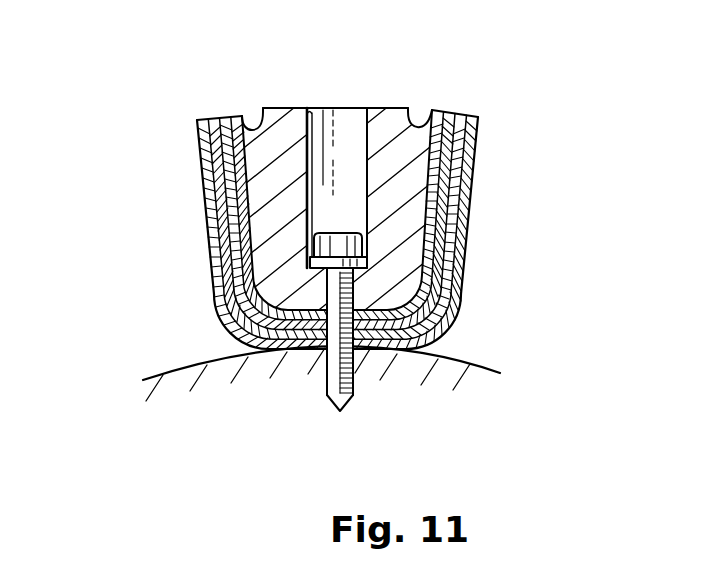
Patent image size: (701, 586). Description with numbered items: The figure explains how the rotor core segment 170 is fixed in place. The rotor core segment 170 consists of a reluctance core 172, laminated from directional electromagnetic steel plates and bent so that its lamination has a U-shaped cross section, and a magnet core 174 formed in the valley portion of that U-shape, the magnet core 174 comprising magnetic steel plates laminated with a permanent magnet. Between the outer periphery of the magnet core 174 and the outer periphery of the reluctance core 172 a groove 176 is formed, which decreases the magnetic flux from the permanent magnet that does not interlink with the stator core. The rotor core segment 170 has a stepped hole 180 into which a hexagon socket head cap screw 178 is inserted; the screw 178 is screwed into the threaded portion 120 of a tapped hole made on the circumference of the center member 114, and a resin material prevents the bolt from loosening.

The center member 114 is at (465, 350).
The threaded portion 120 is at (358, 385).
The rotor core segment 170 is at (160, 280).
The reluctance core 172 is at (477, 150).
The magnet core 174 is at (383, 108).
The groove 176 is at (245, 118).
The hexagon socket head cap screw 178 is at (340, 233).
The stepped hole 180 is at (318, 110).